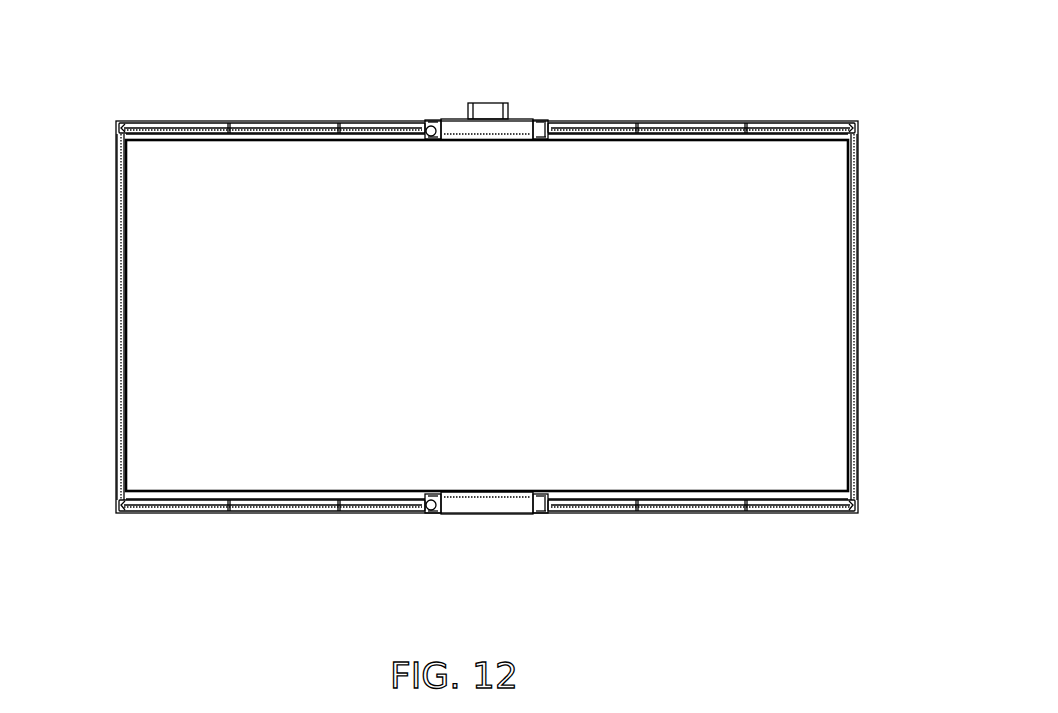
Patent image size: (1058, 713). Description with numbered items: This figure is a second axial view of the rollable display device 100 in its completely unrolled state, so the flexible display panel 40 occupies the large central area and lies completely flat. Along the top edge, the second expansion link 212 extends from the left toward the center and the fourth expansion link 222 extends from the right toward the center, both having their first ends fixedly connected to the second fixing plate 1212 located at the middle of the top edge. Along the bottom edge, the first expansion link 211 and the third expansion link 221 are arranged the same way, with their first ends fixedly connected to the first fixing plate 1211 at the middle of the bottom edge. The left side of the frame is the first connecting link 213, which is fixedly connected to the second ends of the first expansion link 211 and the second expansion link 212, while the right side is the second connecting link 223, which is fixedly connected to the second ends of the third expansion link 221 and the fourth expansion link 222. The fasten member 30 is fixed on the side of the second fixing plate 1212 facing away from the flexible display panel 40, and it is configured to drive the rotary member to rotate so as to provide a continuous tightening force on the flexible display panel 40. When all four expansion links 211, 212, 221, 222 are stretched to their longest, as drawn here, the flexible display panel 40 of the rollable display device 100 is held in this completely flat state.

The rollable display device 100 is at (182, 66).
The fasten member 30 is at (480, 112).
The flexible display panel 40 is at (656, 174).
The second expansion link 212 is at (305, 129).
The second fixing plate 1212 is at (504, 133).
The fourth expansion link 222 is at (770, 129).
The second connecting link 223 is at (850, 344).
The first connecting link 213 is at (127, 301).
The first expansion link 211 is at (290, 498).
The first fixing plate 1211 is at (466, 493).
The third expansion link 221 is at (748, 497).